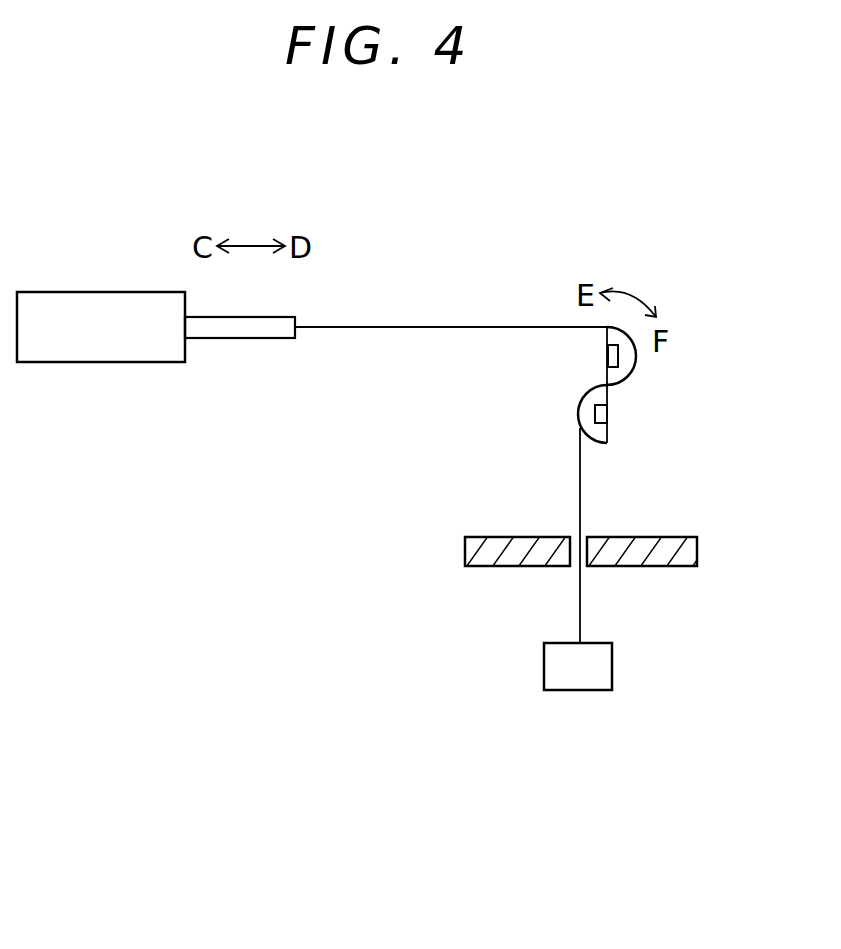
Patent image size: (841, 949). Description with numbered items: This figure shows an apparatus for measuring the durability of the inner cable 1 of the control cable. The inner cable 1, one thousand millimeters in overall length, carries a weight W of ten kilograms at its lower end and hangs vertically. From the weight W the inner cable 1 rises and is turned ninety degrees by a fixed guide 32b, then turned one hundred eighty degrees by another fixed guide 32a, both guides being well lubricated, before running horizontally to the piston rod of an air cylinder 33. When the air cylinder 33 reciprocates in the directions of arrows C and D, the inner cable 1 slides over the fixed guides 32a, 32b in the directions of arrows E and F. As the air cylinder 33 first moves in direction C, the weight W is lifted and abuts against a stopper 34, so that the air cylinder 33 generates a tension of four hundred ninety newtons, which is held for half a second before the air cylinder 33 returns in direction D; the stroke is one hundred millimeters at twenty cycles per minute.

The air cylinder 33 is at (102, 355).
The inner cable 1 is at (578, 474).
The fixed guide 32a is at (623, 369).
The fixed guide 32b is at (602, 434).
The stopper 34 is at (672, 562).
The weight W is at (583, 683).